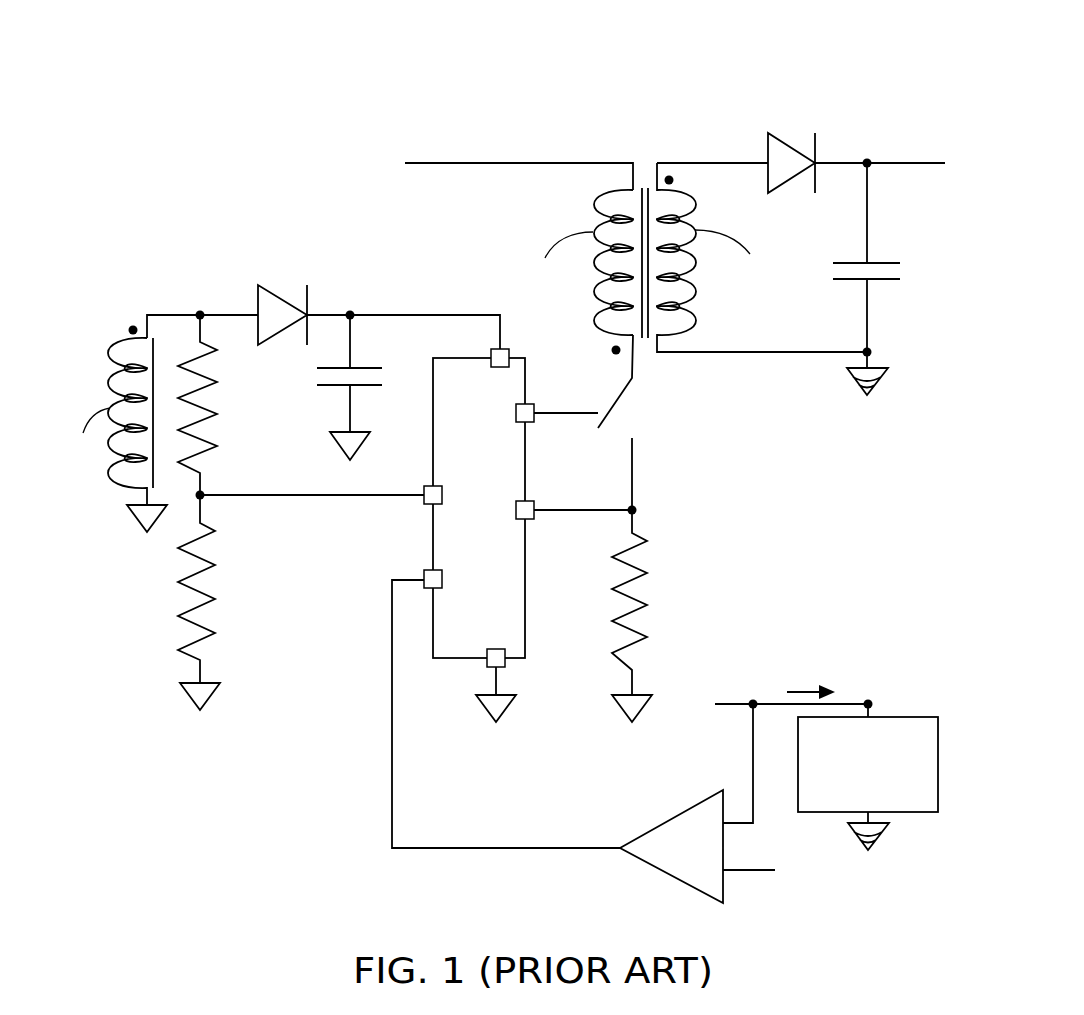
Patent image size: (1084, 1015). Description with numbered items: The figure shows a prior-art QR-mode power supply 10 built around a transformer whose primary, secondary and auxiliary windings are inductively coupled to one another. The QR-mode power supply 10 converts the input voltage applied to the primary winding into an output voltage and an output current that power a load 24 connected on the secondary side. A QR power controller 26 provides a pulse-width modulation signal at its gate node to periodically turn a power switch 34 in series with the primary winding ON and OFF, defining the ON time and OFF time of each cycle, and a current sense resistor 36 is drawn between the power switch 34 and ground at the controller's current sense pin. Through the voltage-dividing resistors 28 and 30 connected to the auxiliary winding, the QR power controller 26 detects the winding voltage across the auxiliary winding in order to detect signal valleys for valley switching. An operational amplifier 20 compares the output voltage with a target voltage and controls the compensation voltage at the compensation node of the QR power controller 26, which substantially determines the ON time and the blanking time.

The QR-mode power supply 10 is at (473, 74).
The operational amplifier 20 is at (675, 818).
The load 24 is at (884, 786).
The QR power controller 26 is at (497, 470).
The voltage-dividing resistor 28 is at (217, 568).
The voltage-dividing resistor 30 is at (217, 452).
The power switch 34 is at (640, 410).
The current sense resistor 36 is at (645, 574).